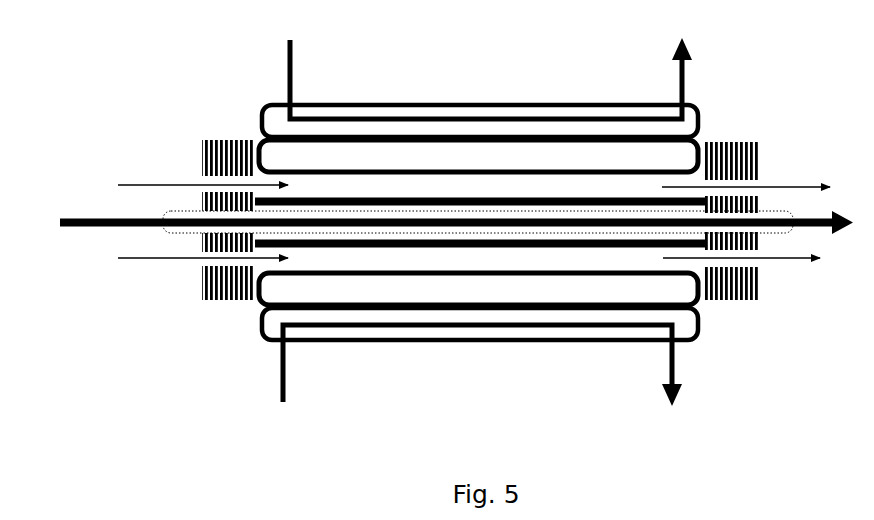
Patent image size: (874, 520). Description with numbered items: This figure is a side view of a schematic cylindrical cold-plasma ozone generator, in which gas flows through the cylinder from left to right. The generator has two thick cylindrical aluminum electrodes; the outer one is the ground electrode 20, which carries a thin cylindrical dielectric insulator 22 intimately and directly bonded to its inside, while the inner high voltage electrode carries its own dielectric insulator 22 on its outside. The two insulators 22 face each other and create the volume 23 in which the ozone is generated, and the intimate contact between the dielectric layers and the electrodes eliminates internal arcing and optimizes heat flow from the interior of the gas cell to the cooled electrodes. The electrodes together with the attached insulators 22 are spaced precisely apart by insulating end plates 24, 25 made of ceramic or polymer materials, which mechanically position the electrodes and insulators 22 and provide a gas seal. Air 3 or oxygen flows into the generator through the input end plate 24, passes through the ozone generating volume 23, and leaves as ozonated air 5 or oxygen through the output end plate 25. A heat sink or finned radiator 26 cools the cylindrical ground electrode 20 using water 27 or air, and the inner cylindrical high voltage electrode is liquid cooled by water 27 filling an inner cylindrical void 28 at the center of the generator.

The air 3 is at (190, 222).
The ozonated air 5 is at (756, 223).
The ground electrode 20 is at (323, 157).
The dielectric insulators 22 is at (533, 193).
The volume 23 is at (383, 187).
The input end plate 24 is at (198, 286).
The output end plate 25 is at (762, 287).
The heat sink/finned radiator 26 is at (507, 103).
The water 27 is at (440, 223).
The inner cylindrical void 28 is at (392, 233).